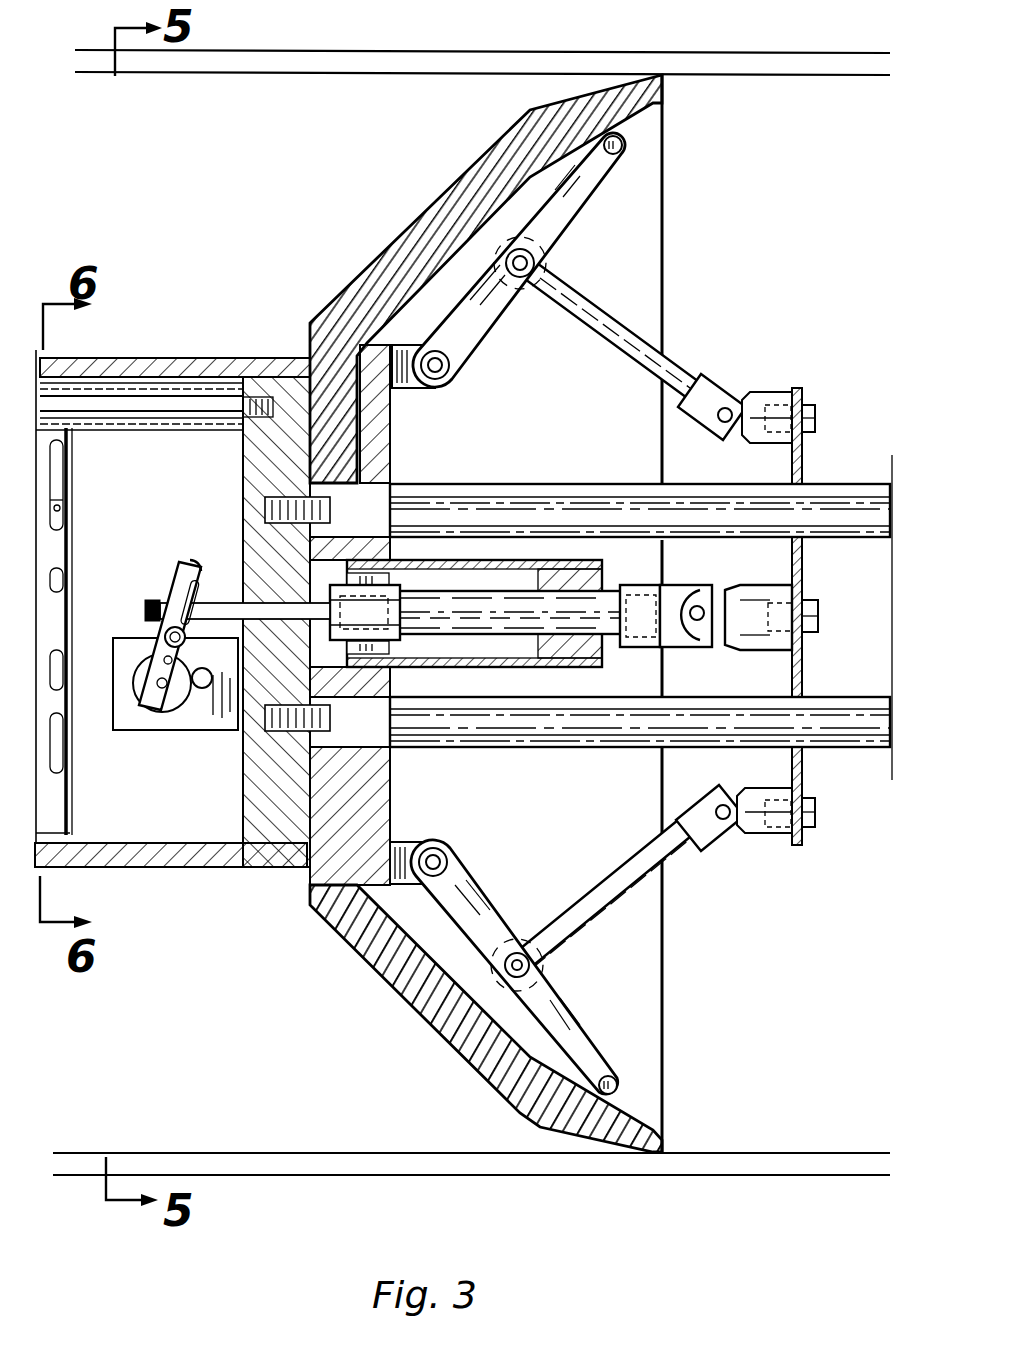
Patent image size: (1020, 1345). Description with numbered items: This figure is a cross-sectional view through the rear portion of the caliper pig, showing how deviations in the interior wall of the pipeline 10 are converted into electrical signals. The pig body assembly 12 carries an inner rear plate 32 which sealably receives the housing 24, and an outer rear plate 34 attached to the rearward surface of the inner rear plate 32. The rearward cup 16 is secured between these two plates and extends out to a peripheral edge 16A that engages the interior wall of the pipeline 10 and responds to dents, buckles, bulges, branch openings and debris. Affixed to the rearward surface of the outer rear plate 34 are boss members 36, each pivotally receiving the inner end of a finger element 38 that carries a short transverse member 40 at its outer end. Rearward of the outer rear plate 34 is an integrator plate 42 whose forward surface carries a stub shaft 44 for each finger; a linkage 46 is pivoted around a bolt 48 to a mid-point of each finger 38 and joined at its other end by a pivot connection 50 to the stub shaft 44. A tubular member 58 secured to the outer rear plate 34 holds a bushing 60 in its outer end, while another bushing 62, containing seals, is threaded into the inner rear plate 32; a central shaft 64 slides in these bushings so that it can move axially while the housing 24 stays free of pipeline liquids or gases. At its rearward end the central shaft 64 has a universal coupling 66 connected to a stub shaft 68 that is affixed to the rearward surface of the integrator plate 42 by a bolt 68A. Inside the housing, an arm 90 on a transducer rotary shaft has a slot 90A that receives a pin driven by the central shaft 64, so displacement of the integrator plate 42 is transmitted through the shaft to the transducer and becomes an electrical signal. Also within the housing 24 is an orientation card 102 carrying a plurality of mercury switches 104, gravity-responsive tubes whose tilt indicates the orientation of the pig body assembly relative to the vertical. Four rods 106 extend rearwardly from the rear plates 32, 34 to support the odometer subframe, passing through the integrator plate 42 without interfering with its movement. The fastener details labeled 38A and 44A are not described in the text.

The pipeline 10 is at (432, 48).
The pig body assembly 12 is at (160, 338).
The rearward cup 16 is at (424, 224).
The peripheral edge 16A is at (665, 76).
The housing 24 is at (205, 356).
The inner rear plate 32 is at (246, 790).
The outer rear plate 34 is at (392, 780).
The boss members 36 is at (413, 386).
The finger element 38 is at (505, 303).
The lever pivot pin 38A is at (464, 874).
The transverse member 40 is at (623, 145).
The integrator plate 42 is at (805, 785).
The stub shaft 44 is at (774, 392).
The clevis bolt 44A is at (818, 418).
The linkage 46 is at (628, 344).
The bolt 48 is at (497, 948).
The pivot connection 50 is at (715, 392).
The tubular member 58 is at (572, 561).
The bushing 60 is at (652, 585).
The bushing 62 is at (242, 590).
The central shaft 64 is at (585, 612).
The universal coupling 66 is at (676, 647).
The stub shaft 68 is at (772, 590).
The bolt 68A is at (818, 616).
The arm 90 is at (148, 640).
The slot 90A is at (183, 582).
The orientation card 102 is at (68, 793).
The mercury switches 104 is at (58, 512).
The rods 106 is at (583, 484).